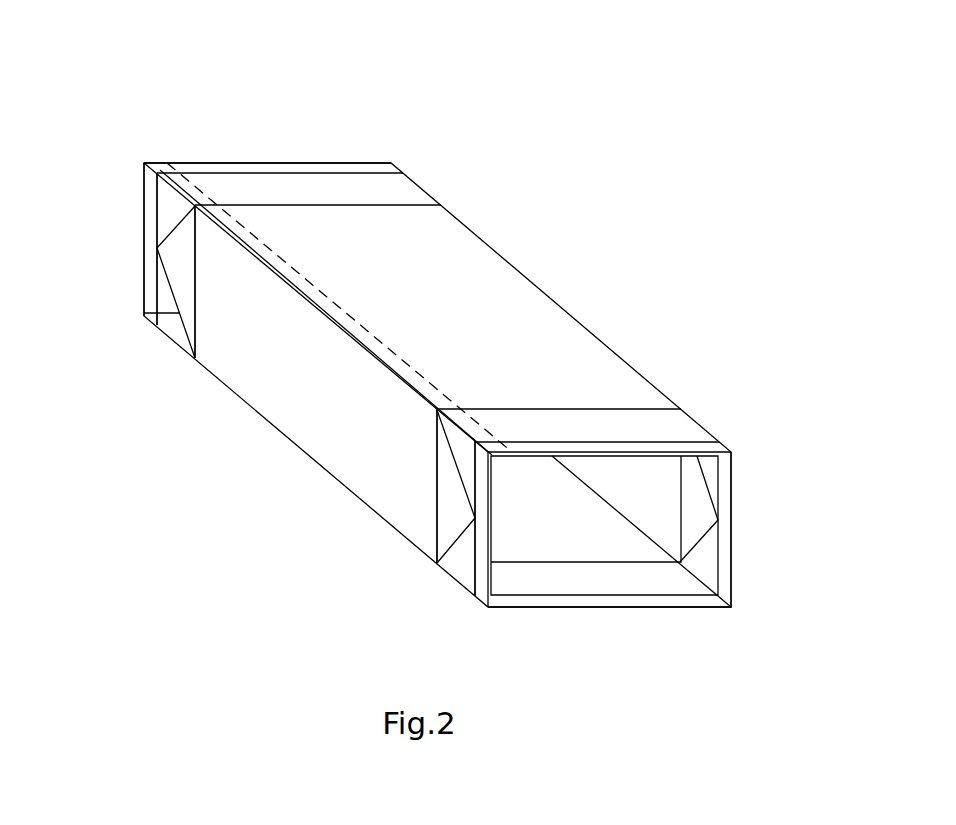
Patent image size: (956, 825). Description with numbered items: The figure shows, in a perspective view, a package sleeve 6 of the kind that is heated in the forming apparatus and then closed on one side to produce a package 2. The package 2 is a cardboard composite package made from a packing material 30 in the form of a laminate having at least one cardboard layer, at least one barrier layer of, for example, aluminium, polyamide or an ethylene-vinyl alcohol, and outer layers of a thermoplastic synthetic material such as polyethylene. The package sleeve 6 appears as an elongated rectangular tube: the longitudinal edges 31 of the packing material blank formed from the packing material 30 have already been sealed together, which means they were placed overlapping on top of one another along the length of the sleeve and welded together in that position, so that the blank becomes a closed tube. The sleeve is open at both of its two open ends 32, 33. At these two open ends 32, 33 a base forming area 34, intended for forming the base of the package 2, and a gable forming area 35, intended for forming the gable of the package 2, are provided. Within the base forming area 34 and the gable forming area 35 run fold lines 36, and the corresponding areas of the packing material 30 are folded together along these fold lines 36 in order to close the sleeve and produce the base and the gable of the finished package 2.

The package 2 is at (605, 245).
The package sleeve 6 is at (266, 392).
The packing material 30 is at (462, 244).
The longitudinal edges 31 is at (341, 308).
The open end 32 is at (314, 136).
The open end 33 is at (762, 482).
The base forming area 34 is at (175, 258).
The gable forming area 35 is at (452, 514).
The fold lines 36 is at (157, 318).